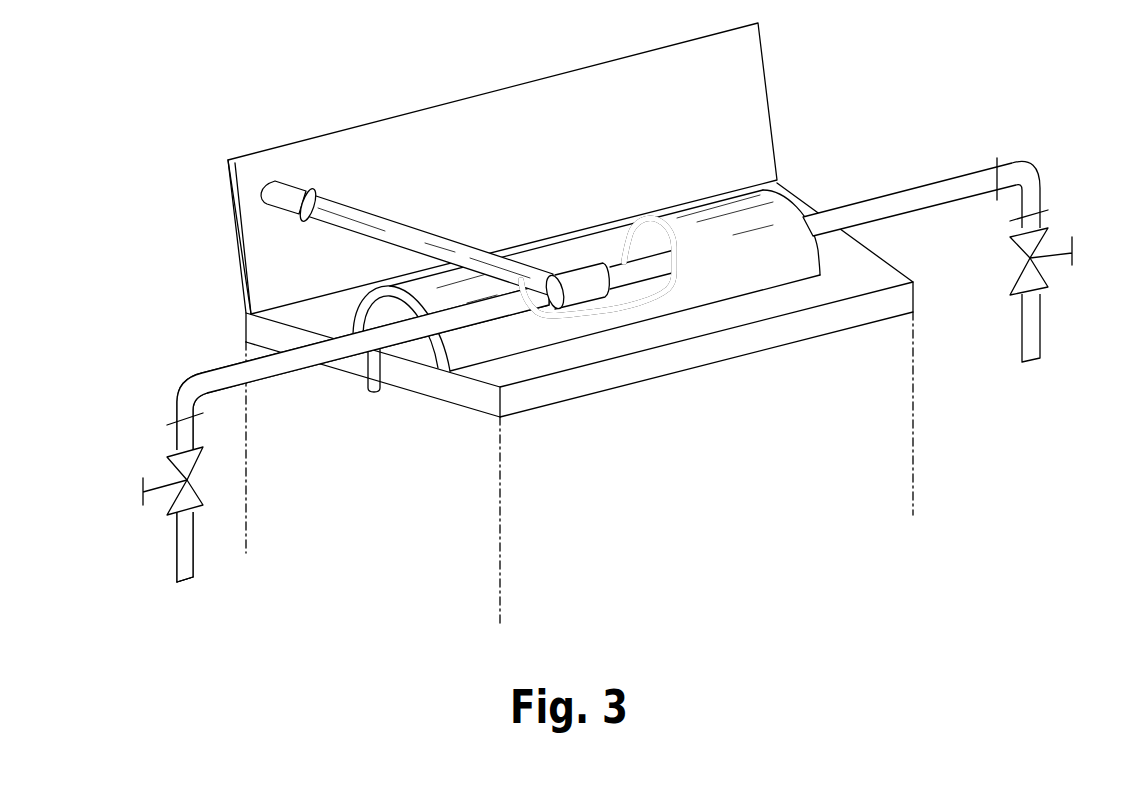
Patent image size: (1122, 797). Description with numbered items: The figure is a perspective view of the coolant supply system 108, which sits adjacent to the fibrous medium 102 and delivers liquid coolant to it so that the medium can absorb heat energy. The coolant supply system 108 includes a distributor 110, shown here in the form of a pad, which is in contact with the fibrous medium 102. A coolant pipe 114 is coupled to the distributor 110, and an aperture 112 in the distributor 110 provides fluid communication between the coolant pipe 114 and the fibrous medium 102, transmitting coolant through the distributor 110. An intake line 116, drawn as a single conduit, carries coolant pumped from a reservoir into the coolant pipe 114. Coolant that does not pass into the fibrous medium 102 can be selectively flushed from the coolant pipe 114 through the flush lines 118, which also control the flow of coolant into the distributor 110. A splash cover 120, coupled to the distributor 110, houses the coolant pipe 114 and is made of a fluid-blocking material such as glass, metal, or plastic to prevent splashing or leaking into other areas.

The fibrous medium 102 is at (610, 528).
The coolant supply system 108 is at (712, 437).
The distributor 110 is at (773, 333).
The aperture 112 is at (377, 393).
The coolant pipe 114 is at (620, 277).
The intake line 116 is at (412, 222).
The flush lines 118 is at (1038, 250).
The splash cover 120 is at (724, 228).